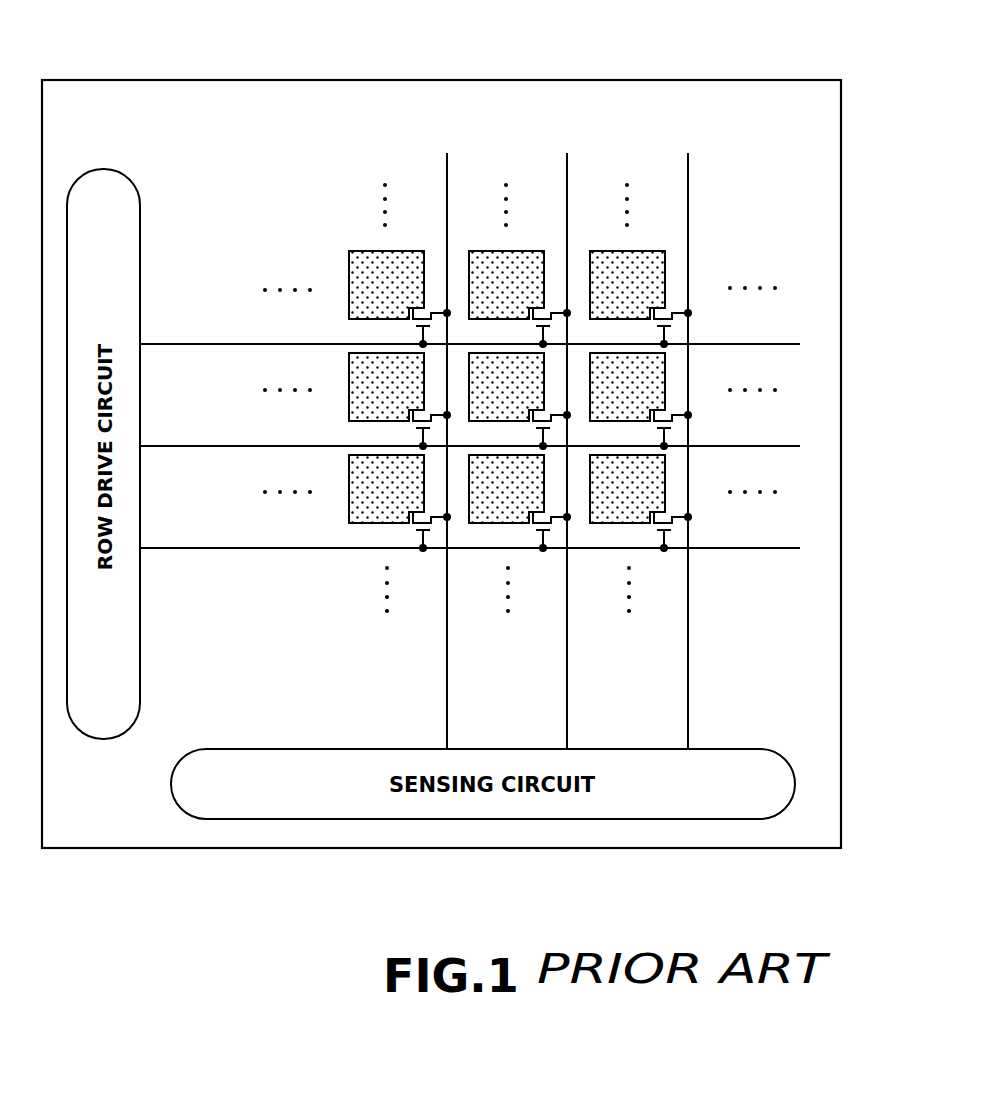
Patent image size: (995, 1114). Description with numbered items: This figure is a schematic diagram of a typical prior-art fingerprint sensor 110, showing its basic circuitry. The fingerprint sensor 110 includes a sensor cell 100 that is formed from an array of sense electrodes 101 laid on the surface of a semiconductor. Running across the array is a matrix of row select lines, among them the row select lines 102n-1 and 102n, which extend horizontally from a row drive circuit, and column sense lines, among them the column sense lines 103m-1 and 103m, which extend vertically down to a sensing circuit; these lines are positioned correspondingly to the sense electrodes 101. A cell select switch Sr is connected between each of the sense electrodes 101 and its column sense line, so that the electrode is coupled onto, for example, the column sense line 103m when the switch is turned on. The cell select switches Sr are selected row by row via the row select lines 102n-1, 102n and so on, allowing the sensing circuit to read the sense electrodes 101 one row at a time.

The fingerprint sensor 110 is at (668, 80).
The sensor cell 100 is at (575, 423).
The sense electrode 101 is at (654, 270).
The cell select switch Sr is at (664, 311).
The row select line 102n-1 is at (170, 345).
The row select line 102n is at (170, 447).
The column sense line 103m-1 is at (446, 683).
The column sense line 103m is at (567, 703).